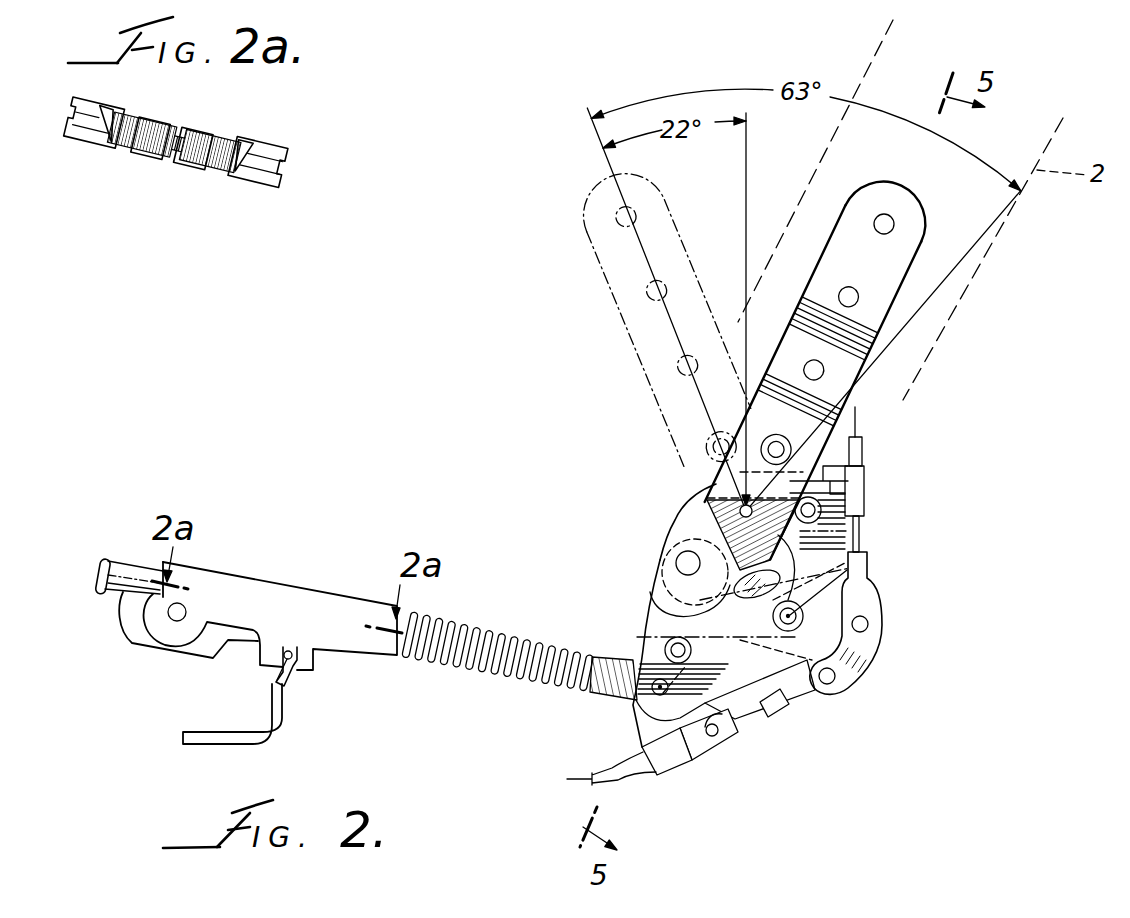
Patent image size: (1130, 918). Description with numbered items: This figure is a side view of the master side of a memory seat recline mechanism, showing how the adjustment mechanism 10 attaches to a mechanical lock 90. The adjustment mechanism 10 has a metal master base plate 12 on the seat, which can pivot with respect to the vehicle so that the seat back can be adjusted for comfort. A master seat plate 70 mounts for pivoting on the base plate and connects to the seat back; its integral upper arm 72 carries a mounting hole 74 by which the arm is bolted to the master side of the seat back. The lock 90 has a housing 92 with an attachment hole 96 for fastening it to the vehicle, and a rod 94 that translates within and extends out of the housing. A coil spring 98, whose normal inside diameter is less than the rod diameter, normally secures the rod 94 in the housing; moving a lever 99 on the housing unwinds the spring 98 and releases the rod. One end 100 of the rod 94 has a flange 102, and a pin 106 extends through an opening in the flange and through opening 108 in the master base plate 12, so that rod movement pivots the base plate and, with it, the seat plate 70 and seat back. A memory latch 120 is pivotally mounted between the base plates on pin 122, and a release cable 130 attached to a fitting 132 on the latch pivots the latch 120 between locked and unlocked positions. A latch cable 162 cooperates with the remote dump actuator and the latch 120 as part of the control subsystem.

In FIG. 2, the adjustment mechanism 10 is at (882, 423).
In FIG. 2, the master base plate 12 is at (687, 510).
In FIG. 2, the master seat plate 70 is at (693, 533).
In FIG. 2, the upper arm 72 is at (867, 350).
In FIG. 2, the mounting hole 74 is at (894, 226).
In FIG. 2, the lock 90 is at (292, 588).
In FIG. 2, the housing 92 is at (180, 573).
In FIG. 2, the rod 94 is at (108, 563).
In FIG. 2, the attachment hole 96 is at (172, 618).
In FIG. 2A, the spring 98 is at (226, 137).
In FIG. 2, the lever 99 is at (297, 677).
In FIG. 2, the end of rod 100 is at (440, 623).
In FIG. 2, the flange 102 is at (613, 693).
In FIG. 2, the pin 106 is at (657, 697).
In FIG. 2, the opening 108 is at (642, 643).
In FIG. 2, the memory latch 120 is at (862, 657).
In FIG. 2, the pin 122 is at (780, 625).
In FIG. 2, the cable 130 is at (862, 533).
In FIG. 2, the fitting 132 is at (865, 483).
In FIG. 2, the latch cable 162 is at (602, 767).